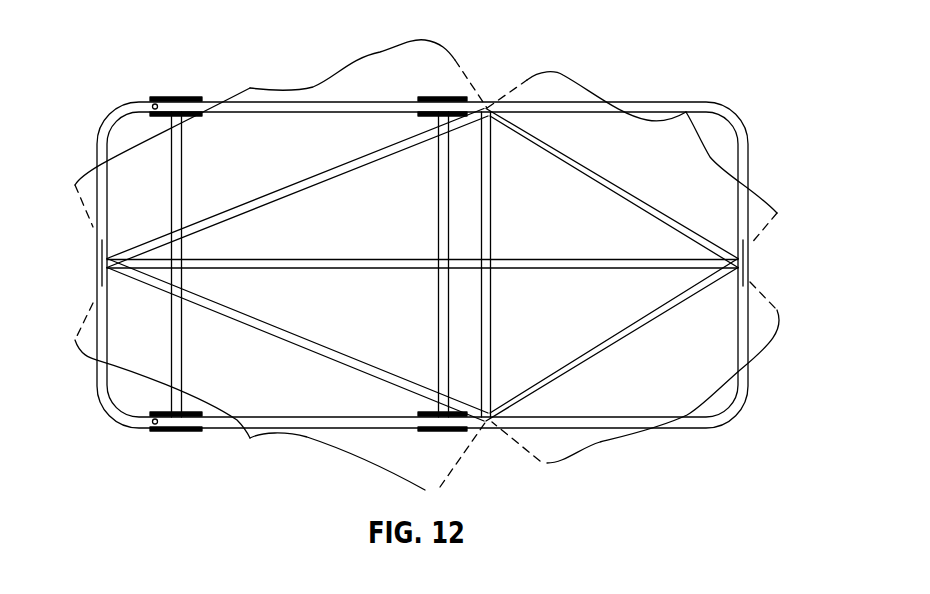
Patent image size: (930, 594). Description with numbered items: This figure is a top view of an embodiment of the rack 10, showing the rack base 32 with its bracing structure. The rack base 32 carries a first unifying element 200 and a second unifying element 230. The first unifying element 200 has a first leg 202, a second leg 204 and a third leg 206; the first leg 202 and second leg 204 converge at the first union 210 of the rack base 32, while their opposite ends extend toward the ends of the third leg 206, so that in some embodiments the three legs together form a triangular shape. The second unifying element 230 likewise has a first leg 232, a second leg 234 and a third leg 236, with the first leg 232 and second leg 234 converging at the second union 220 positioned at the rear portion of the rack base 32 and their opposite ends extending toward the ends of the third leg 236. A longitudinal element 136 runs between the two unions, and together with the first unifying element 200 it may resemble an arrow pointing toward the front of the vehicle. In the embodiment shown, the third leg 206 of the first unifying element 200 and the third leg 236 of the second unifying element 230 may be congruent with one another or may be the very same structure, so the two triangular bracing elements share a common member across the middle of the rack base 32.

The apparatus 10 is at (712, 29).
The rack base 32 is at (97, 106).
The longitudinal element 136 is at (293, 269).
The first unifying element 200 is at (686, 112).
The first leg 202 is at (641, 198).
The second leg 204 is at (624, 341).
The third leg 206 is at (492, 242).
The first union 210 is at (750, 263).
The second union 220 is at (97, 262).
The second unifying element 230 is at (250, 88).
The first leg 232 is at (335, 174).
The second leg 234 is at (240, 321).
The third leg 236 is at (450, 232).